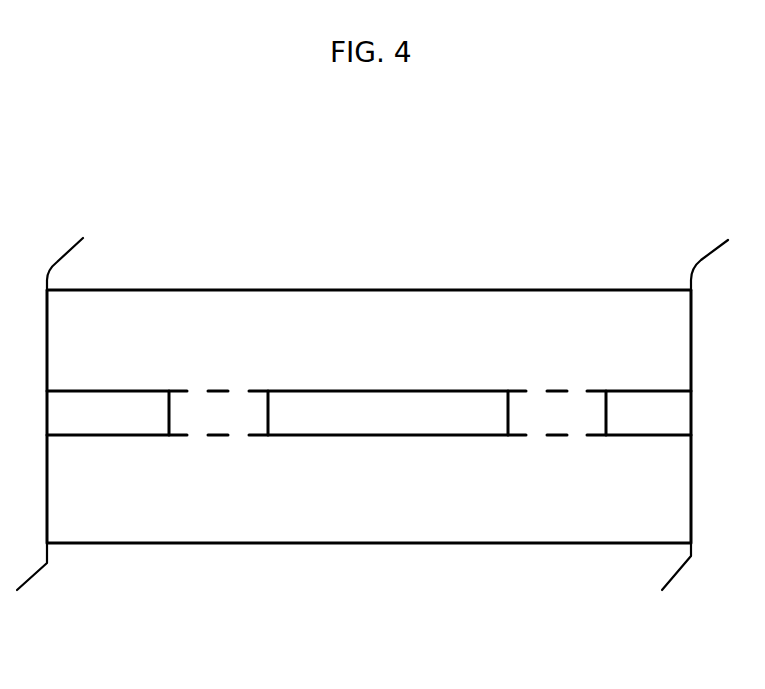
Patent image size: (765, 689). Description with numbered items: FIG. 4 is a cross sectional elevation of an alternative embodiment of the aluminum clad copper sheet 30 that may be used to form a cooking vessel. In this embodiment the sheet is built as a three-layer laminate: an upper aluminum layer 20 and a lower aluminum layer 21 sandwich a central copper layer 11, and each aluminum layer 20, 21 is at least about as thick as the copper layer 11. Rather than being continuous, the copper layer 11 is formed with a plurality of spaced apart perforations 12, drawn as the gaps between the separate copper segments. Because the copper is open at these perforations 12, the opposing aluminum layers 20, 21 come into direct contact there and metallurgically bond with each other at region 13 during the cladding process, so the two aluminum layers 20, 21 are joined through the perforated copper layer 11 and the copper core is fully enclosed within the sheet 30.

The laminate / capacitor body 30 is at (372, 381).
The aluminum layer 20 is at (205, 290).
The aluminum layer 21 is at (360, 543).
The copper layer 11 is at (351, 413).
The perforations 12 is at (560, 438).
The region 13 is at (212, 413).